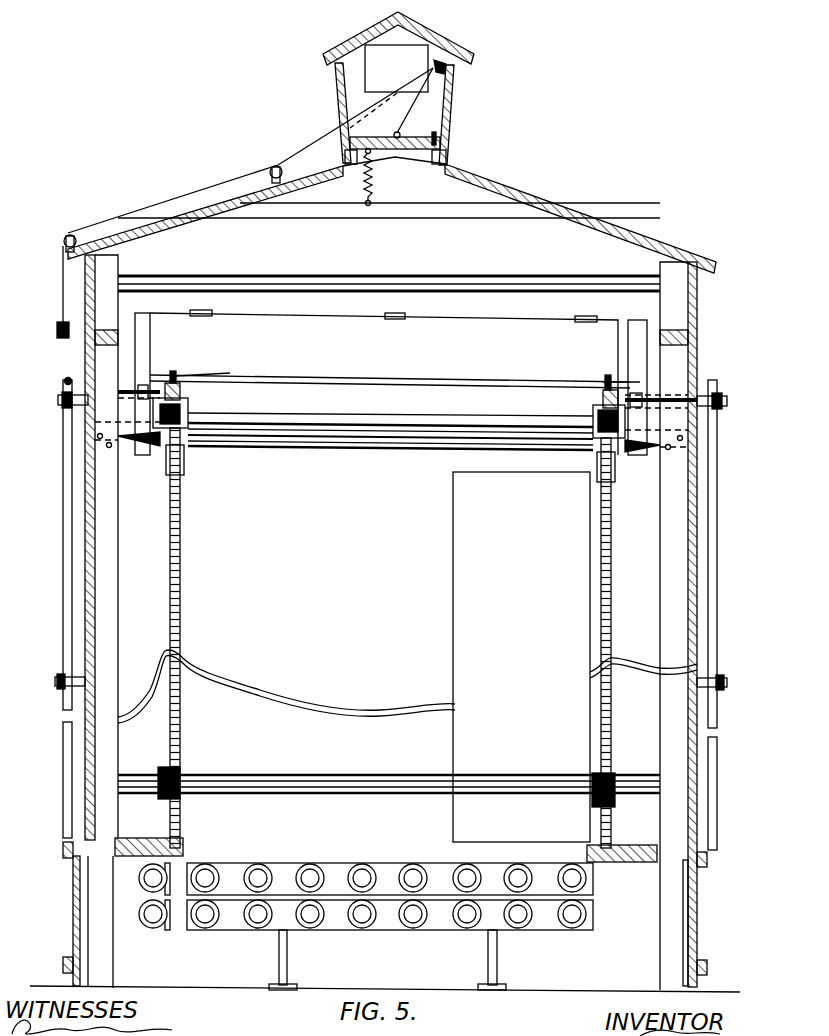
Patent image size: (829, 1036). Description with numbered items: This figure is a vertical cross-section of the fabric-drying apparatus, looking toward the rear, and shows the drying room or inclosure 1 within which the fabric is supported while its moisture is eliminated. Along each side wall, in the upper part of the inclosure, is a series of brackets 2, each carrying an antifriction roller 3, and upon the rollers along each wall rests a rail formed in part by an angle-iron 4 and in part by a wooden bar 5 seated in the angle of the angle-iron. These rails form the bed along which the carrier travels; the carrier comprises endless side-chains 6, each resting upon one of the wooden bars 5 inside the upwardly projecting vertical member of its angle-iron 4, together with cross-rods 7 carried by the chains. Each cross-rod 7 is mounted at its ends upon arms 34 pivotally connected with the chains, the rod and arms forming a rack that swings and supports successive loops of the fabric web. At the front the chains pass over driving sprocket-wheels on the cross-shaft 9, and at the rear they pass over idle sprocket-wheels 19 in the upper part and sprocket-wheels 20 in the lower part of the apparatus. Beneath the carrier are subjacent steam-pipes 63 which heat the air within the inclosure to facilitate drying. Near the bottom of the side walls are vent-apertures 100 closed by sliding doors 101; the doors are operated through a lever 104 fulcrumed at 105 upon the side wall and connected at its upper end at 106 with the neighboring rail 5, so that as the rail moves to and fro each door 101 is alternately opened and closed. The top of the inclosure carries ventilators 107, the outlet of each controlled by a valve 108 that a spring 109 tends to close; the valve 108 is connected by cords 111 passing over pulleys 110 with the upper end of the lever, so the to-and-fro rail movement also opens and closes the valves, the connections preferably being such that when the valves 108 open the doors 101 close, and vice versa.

The drying room or inclosure 1 is at (700, 371).
The brackets 2 is at (183, 447).
The antifriction roller 3 is at (160, 448).
The angle-iron 4 is at (161, 389).
The wooden bar 5 is at (183, 395).
The endless side-chains 6 is at (178, 383).
The cross-rods 7 is at (415, 376).
The cross-shaft 9 is at (360, 449).
The sprocket-wheels 19 is at (182, 475).
The sprocket-wheels 20 is at (180, 807).
The arms 34 is at (176, 378).
The steam-pipes 63 is at (318, 866).
The vent-apertures 100 is at (86, 930).
The sliding doors 101 is at (63, 878).
The lever 104 is at (62, 777).
The fulcrum 105 is at (55, 683).
The connection to rail 106 is at (75, 406).
The ventilators 107 is at (458, 118).
The valve 108 is at (378, 136).
The spring 109 is at (364, 177).
The pulleys 110 is at (447, 66).
The cords 111 is at (322, 151).